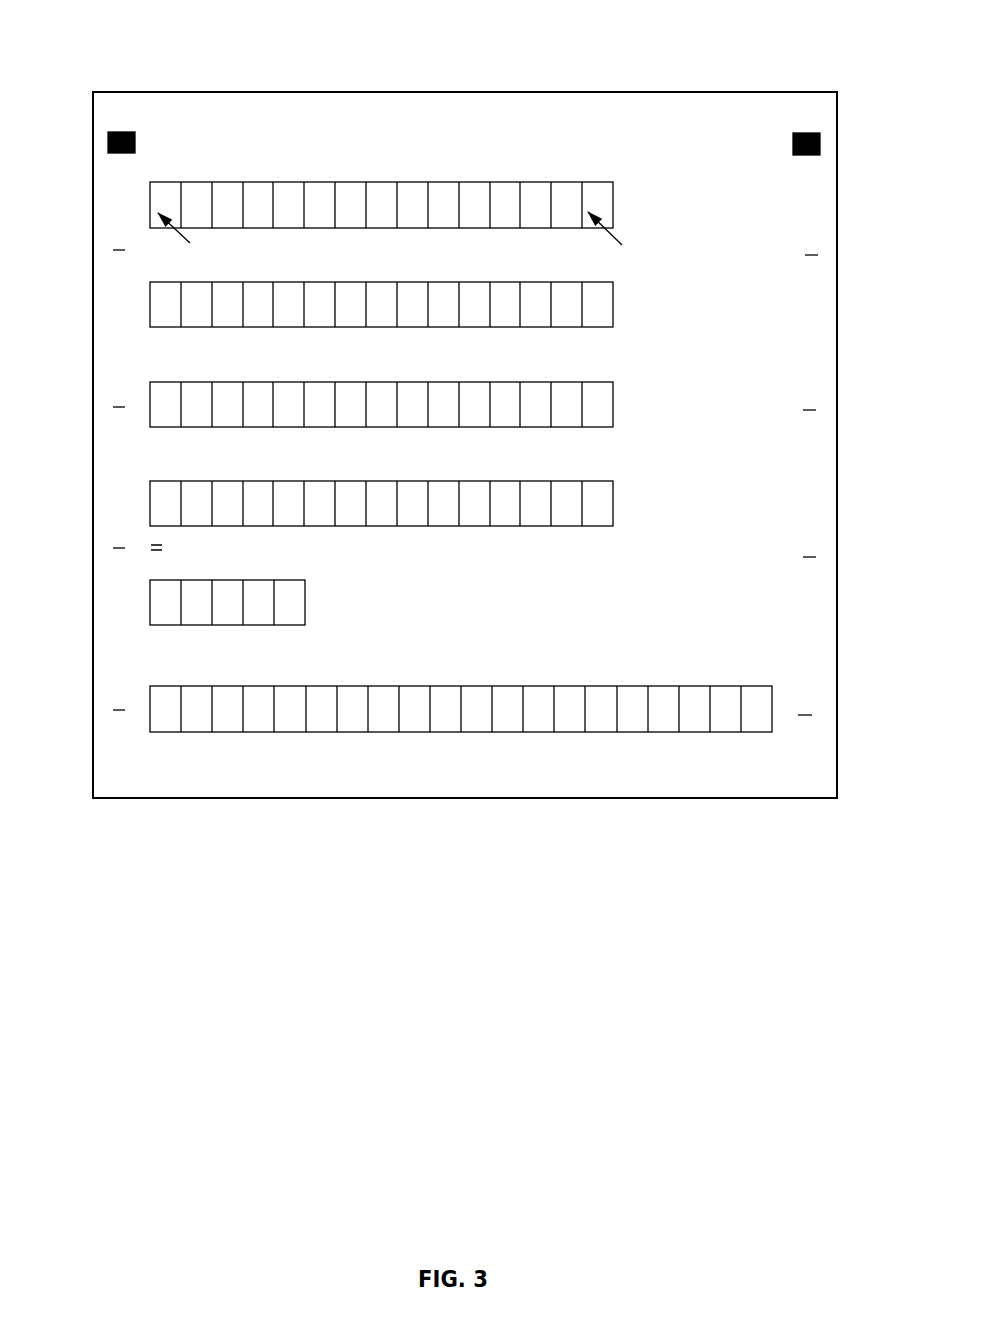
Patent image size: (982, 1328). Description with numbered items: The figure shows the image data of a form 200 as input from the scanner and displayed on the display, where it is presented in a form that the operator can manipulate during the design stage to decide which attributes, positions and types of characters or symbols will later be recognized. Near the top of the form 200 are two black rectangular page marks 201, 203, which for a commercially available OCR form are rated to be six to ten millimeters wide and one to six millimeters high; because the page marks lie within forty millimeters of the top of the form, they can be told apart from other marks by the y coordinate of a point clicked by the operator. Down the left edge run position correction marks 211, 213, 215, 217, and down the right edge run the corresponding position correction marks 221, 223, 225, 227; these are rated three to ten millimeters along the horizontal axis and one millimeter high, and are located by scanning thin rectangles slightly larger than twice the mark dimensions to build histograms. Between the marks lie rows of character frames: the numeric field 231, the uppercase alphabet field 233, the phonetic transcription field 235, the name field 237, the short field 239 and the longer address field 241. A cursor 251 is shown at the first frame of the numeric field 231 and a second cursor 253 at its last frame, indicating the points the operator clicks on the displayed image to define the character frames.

The form image 200 is at (705, 90).
The page mark 201 is at (103, 140).
The page mark 203 is at (822, 145).
The position correction mark 211 is at (103, 247).
The position correction mark 213 is at (103, 405).
The position correction mark 215 is at (103, 545).
The position correction mark 217 is at (103, 706).
The position correction mark 221 is at (821, 250).
The position correction mark 223 is at (821, 407).
The position correction mark 225 is at (821, 548).
The position correction mark 227 is at (821, 707).
The numeric input field 231 is at (616, 205).
The uppercase alphabet input field 233 is at (616, 315).
The phonetic transcription input field 235 is at (616, 410).
The name input field 237 is at (616, 510).
The T input field 239 is at (308, 595).
The address input field 241 is at (719, 685).
The cursor 251 is at (165, 214).
The cursor 253 is at (590, 212).